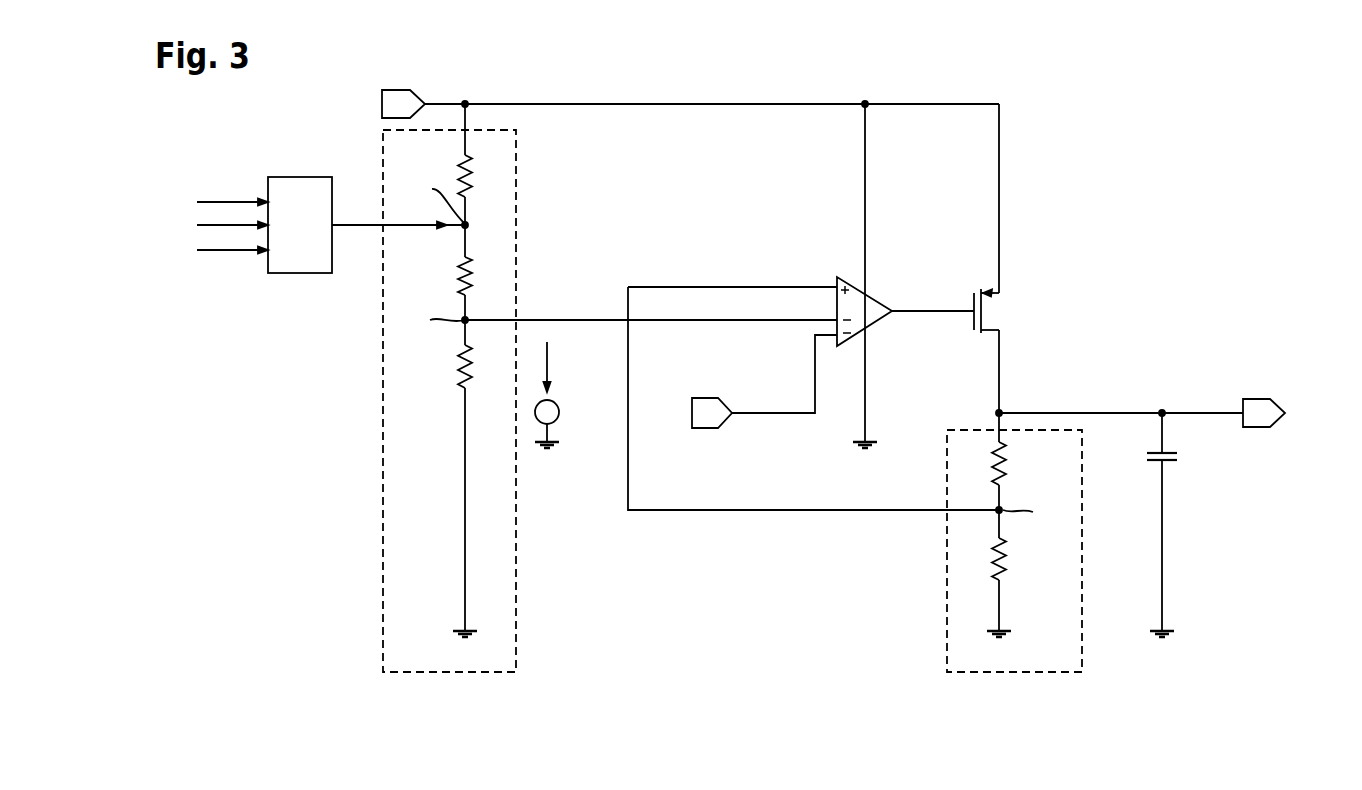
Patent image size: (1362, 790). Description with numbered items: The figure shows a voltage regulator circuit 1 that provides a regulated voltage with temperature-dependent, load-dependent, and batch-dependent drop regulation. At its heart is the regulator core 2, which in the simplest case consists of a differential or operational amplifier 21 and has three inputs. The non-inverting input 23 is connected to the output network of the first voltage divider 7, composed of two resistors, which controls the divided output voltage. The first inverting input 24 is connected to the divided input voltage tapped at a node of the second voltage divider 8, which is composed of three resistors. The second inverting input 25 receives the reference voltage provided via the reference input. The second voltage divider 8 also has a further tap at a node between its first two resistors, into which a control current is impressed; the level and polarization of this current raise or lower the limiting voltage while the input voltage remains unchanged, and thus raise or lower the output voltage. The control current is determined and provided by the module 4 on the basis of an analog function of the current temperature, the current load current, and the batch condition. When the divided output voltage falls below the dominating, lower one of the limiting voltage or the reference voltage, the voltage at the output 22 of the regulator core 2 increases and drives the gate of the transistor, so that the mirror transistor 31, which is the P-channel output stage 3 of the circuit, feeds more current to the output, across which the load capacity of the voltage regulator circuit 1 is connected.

The voltage regulator circuit 1 is at (282, 648).
The regulator core 2 is at (887, 287).
The output stage 3 is at (1015, 287).
The module 4 is at (302, 275).
The first voltage divider 7 is at (1097, 655).
The second voltage divider 8 is at (530, 656).
The differential amplifier 21 is at (878, 320).
The output of the regulator core 22 is at (895, 313).
The non-inverting input INP 23 is at (833, 285).
The first inverting input INN1 24 is at (833, 320).
The second inverting input INN2 25 is at (833, 333).
The mirror transistor 31 is at (983, 335).